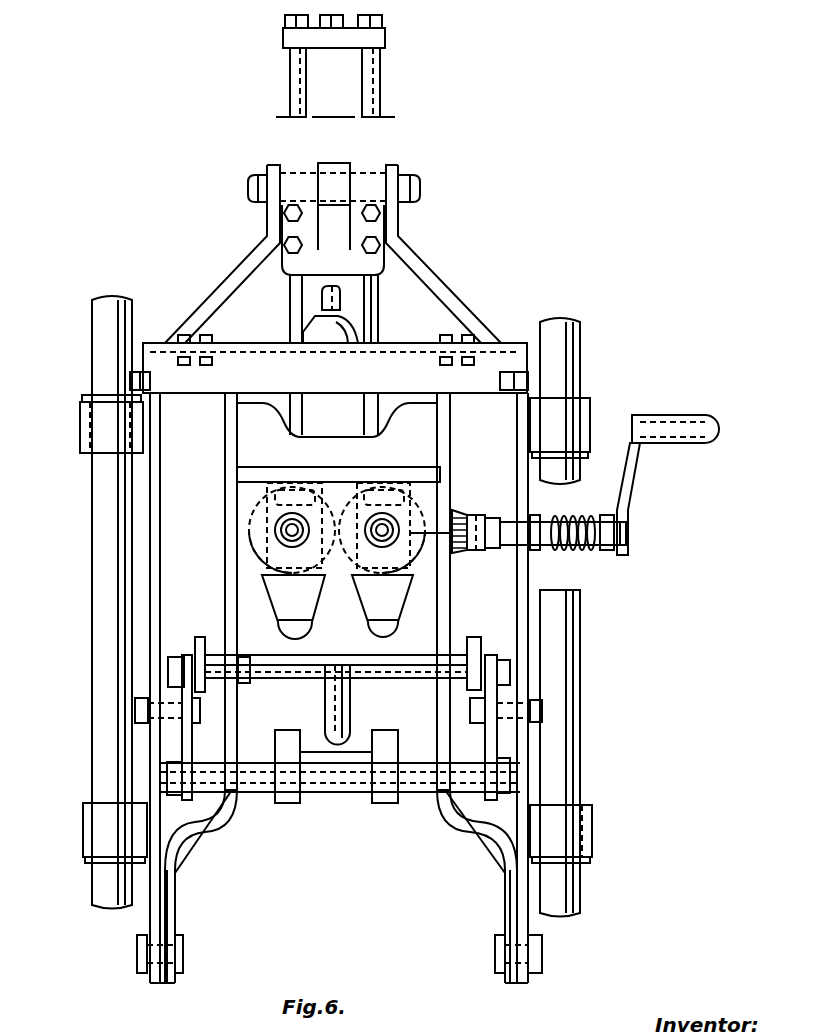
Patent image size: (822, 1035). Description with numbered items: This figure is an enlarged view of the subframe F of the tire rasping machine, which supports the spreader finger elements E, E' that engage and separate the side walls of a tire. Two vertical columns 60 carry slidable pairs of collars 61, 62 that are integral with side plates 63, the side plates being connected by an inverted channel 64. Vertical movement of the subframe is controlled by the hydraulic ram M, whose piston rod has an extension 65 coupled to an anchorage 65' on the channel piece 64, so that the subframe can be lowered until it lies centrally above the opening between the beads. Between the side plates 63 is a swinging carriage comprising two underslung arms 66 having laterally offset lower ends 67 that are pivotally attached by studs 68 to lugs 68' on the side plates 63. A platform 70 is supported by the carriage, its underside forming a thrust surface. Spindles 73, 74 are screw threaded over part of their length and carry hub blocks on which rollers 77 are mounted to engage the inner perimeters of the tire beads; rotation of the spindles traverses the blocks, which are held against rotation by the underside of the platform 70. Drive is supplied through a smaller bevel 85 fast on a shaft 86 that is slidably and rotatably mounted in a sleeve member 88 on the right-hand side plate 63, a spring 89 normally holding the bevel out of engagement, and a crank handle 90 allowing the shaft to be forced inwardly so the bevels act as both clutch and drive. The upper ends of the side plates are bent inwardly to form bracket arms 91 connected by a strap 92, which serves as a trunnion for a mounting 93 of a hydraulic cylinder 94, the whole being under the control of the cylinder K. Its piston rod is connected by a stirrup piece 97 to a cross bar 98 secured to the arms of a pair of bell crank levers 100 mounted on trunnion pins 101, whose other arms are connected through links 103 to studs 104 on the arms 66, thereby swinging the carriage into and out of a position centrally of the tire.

The hydraulic ram M is at (360, 92).
The mounting 93 is at (330, 190).
The strap 92 is at (420, 190).
The bracket arms 91 is at (245, 282).
The cylinder K is at (370, 296).
The hydraulic cylinder 94 is at (378, 312).
The extension 65 is at (292, 302).
The anchorage 65' is at (313, 345).
The inverted channel 64 is at (329, 364).
The vertical columns 60 is at (108, 322).
The collar 62 is at (120, 445).
The collar 61 is at (580, 412).
The side plates 63 is at (205, 588).
The subframe F is at (337, 426).
The platform 70 is at (392, 478).
The underslung arms 66 is at (450, 446).
The roller 77 is at (265, 520).
The spindle 73 is at (292, 530).
The spindle 74 is at (383, 540).
The spreader finger element E is at (299, 610).
The spreader finger element E' is at (390, 608).
The links 103 is at (198, 637).
The studs 104 is at (455, 655).
The bell crank levers 100 is at (185, 745).
The trunnion pins 101 is at (165, 712).
The stirrup piece 97 is at (385, 742).
The cross bar 98 is at (420, 790).
The laterally offset lower ends 67 is at (172, 905).
The lugs 68' is at (307, 926).
The studs 68 is at (341, 959).
The bevel 85 is at (462, 510).
The shaft 86 is at (482, 528).
The sleeve member 88 is at (482, 540).
The spring 89 is at (560, 518).
The crank handle 90 is at (632, 472).